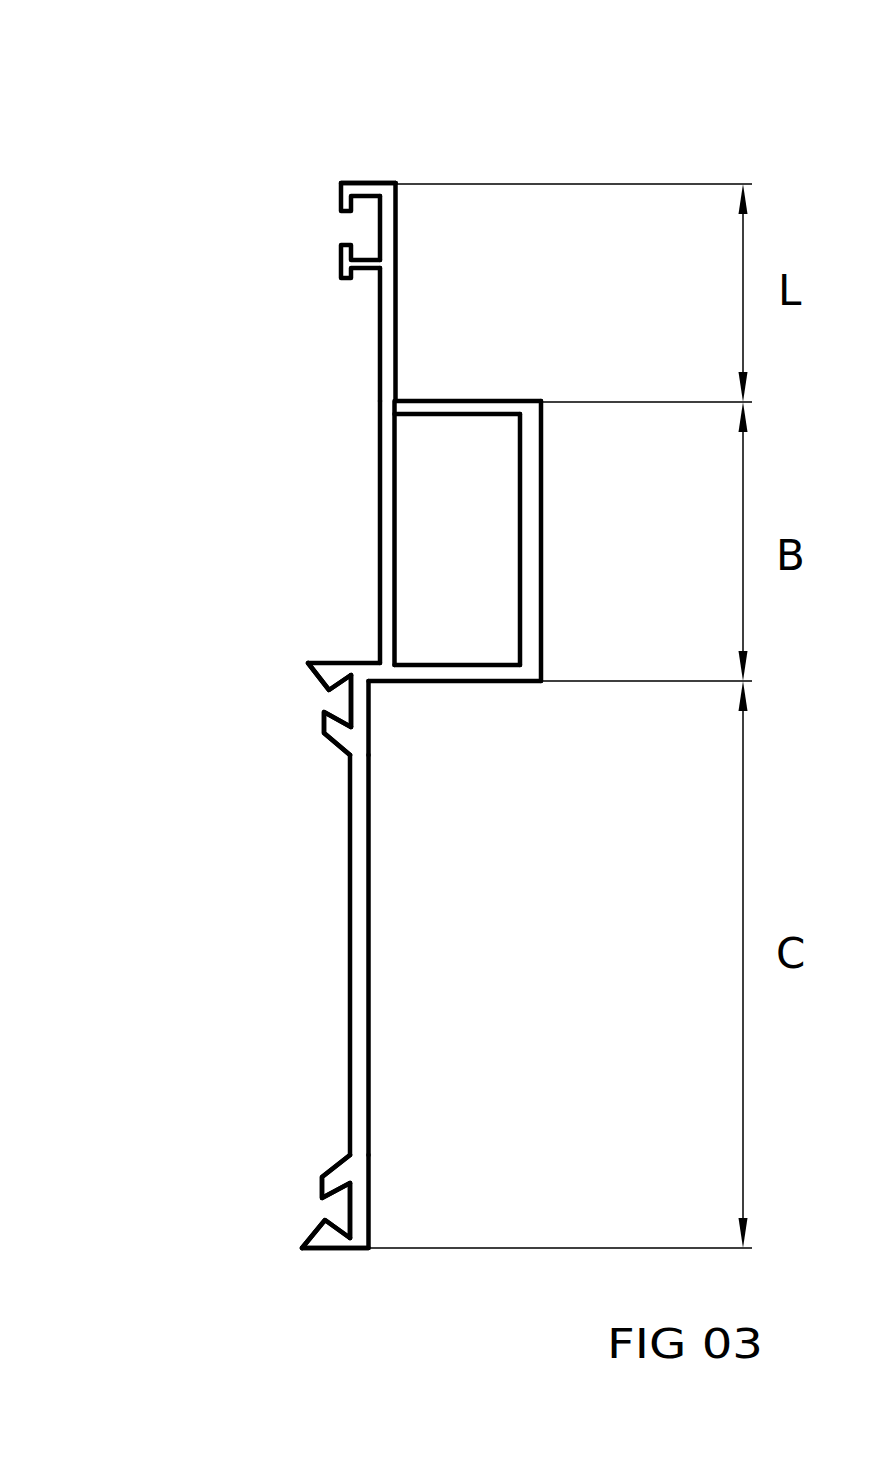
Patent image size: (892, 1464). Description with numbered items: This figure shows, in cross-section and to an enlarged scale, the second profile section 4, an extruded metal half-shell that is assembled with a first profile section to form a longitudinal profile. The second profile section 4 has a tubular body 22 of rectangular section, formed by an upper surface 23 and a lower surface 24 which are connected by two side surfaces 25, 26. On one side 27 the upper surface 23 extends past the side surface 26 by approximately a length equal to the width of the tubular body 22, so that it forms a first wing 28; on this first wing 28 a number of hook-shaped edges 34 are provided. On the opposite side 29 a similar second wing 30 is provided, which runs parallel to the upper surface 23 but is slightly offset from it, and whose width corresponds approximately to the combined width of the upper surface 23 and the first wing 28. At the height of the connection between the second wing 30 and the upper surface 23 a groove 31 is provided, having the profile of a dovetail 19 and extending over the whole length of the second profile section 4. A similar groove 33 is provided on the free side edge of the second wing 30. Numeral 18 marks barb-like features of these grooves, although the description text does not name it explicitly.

The second profile section 4 is at (138, 123).
The barb 18 is at (330, 667).
The dovetail 19 is at (337, 715).
The tubular body 22 is at (235, 532).
The upper surface 23 is at (379, 523).
The lower surface 24 is at (541, 525).
The side surface 25 is at (450, 683).
The side surface 26 is at (447, 412).
The side 27 is at (357, 120).
The first wing 28 is at (396, 275).
The opposite side 29 is at (337, 1290).
The second wing 30 is at (358, 945).
The groove 31 is at (256, 703).
The groove 33 is at (254, 1208).
The hook-shaped edges 34 is at (294, 232).